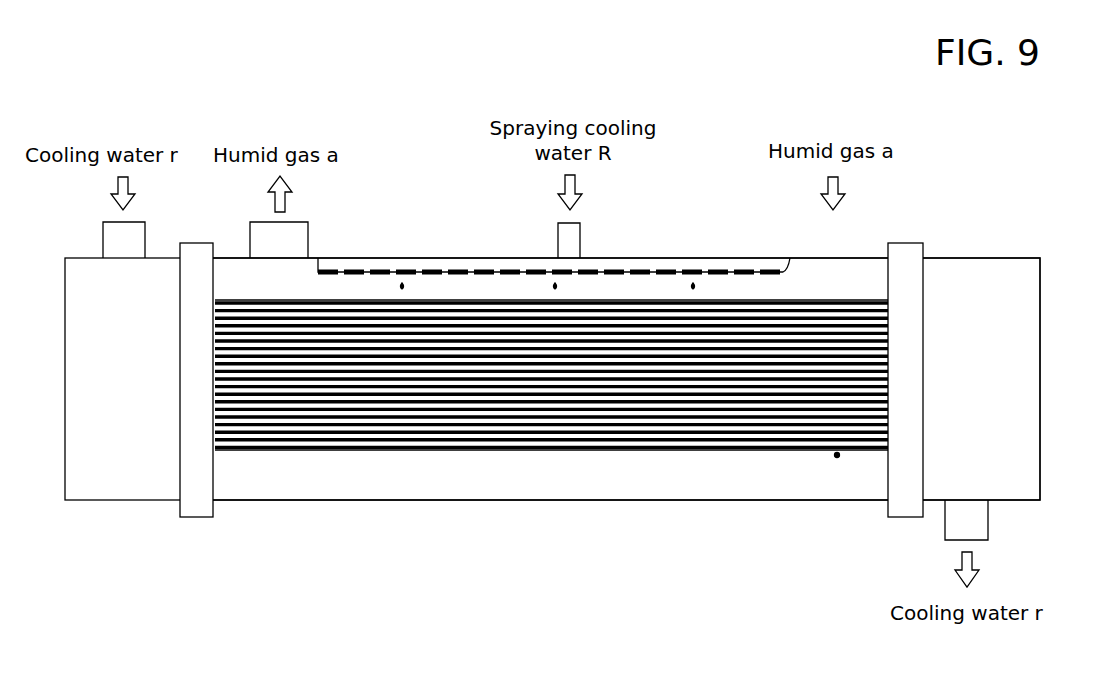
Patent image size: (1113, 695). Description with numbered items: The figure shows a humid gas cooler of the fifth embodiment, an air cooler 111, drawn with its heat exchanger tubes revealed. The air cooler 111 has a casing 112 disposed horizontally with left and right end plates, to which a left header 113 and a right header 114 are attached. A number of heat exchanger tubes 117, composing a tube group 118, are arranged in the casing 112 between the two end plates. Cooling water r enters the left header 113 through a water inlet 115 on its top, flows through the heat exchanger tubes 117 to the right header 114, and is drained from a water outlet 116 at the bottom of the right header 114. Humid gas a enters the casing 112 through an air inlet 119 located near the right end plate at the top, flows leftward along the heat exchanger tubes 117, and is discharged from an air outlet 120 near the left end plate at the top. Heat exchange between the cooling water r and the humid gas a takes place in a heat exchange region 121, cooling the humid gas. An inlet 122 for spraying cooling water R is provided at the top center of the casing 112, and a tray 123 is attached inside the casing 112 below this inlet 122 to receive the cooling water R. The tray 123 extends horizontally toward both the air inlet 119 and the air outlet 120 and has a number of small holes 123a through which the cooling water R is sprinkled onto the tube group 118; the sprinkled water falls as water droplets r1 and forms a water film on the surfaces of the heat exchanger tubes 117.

The air cooler 111 is at (438, 136).
The casing 112 is at (587, 258).
The left header 113 is at (72, 258).
The right header 114 is at (968, 258).
The water inlet 115 is at (145, 233).
The water outlet 116 is at (988, 518).
The heat exchanger tubes 117 is at (247, 453).
The tube group 118 is at (400, 461).
The air inlet 119 is at (870, 228).
The air outlet 120 is at (308, 230).
The heat exchange region 121 is at (574, 467).
The inlet 122 is at (557, 223).
The tray 123 is at (803, 257).
The small holes 123a is at (405, 266).
The water droplets r1 is at (696, 287).